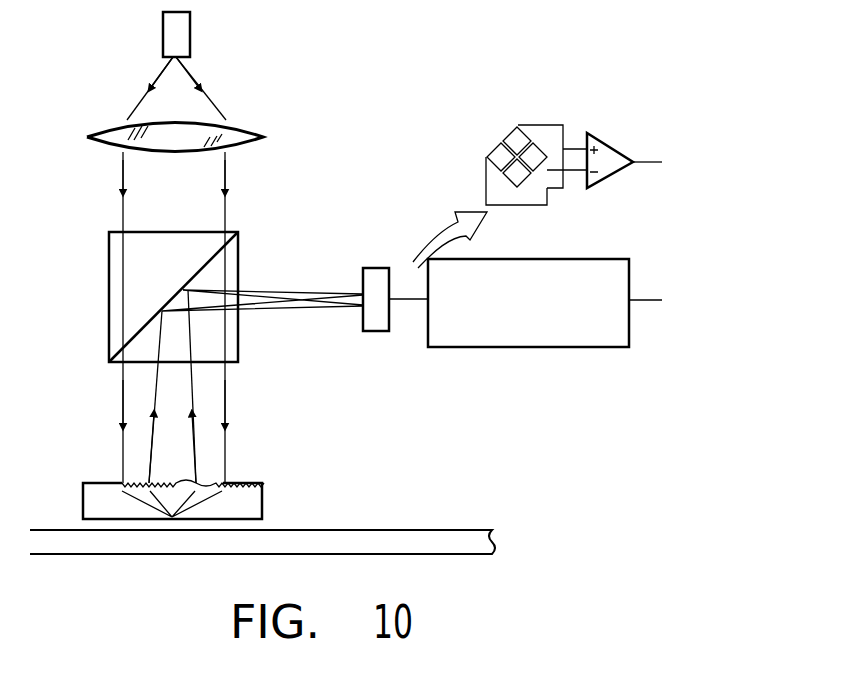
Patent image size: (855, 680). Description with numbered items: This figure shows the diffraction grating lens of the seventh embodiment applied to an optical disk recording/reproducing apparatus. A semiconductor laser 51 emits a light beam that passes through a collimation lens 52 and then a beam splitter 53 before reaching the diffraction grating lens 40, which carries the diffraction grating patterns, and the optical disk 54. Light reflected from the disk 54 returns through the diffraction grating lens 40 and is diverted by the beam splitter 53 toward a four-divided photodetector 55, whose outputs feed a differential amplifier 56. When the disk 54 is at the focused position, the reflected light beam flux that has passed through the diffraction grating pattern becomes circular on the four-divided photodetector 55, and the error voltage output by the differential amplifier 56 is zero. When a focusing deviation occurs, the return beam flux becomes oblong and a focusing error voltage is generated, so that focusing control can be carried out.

The diffraction grating lens 40 is at (262, 500).
The semiconductor laser 51 is at (184, 33).
The collimation lens 52 is at (247, 133).
The beam splitter 53 is at (240, 253).
The optical disk 54 is at (440, 537).
The four-divided photodetector 55 is at (373, 331).
The differential amplifier 56 is at (462, 347).